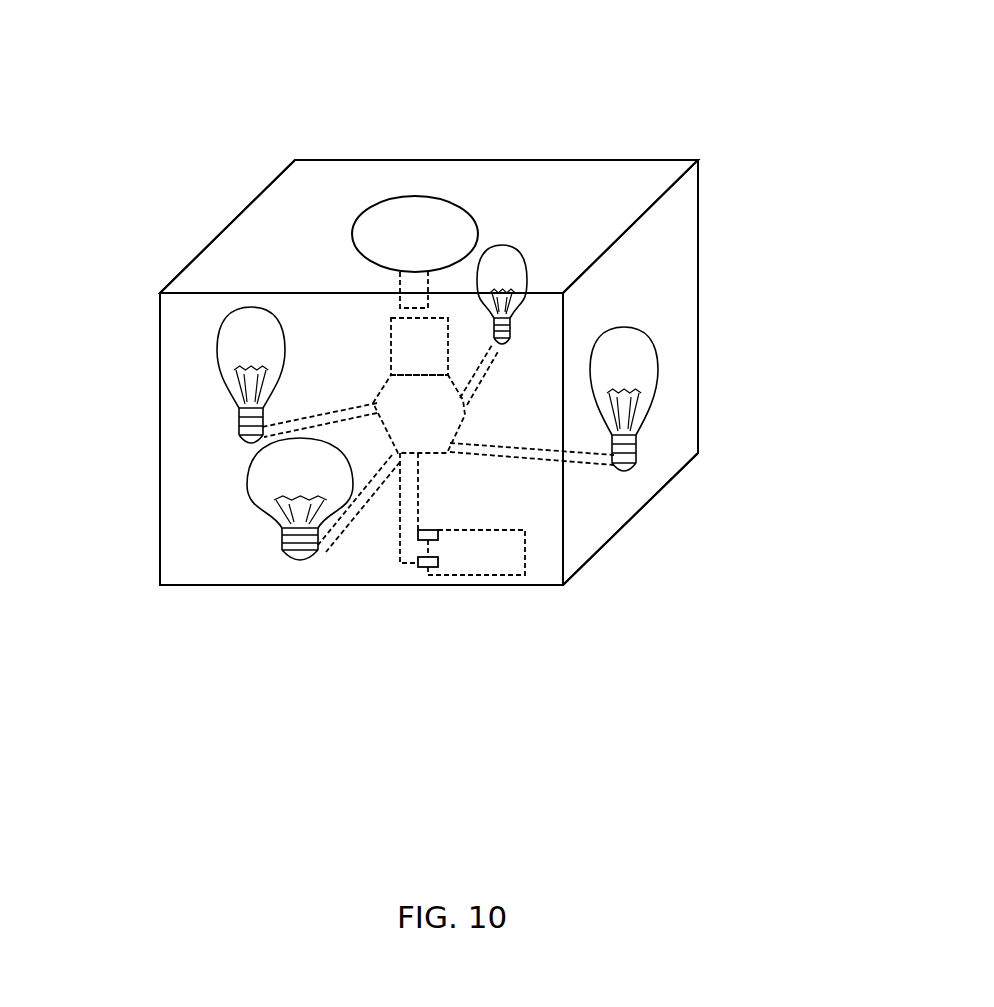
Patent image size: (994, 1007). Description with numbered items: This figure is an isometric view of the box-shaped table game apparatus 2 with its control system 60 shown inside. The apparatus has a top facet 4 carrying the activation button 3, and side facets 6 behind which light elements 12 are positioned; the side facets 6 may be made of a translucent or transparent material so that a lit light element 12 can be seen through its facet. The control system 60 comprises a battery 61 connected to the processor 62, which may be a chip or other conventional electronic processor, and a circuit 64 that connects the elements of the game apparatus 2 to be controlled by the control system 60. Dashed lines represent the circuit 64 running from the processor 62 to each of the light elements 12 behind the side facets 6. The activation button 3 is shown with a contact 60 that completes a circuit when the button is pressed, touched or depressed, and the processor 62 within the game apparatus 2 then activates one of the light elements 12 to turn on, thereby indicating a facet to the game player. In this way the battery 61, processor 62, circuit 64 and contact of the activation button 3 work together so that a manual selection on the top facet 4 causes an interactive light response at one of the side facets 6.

The game apparatus 2 is at (508, 112).
The activation button 3 is at (412, 228).
The top facet 4 is at (555, 210).
The side facets 6 is at (200, 427).
The light element 12 is at (218, 353).
The control system 60 is at (388, 309).
The battery 61 is at (438, 567).
The processor 62 is at (440, 444).
The circuit 64 is at (588, 472).